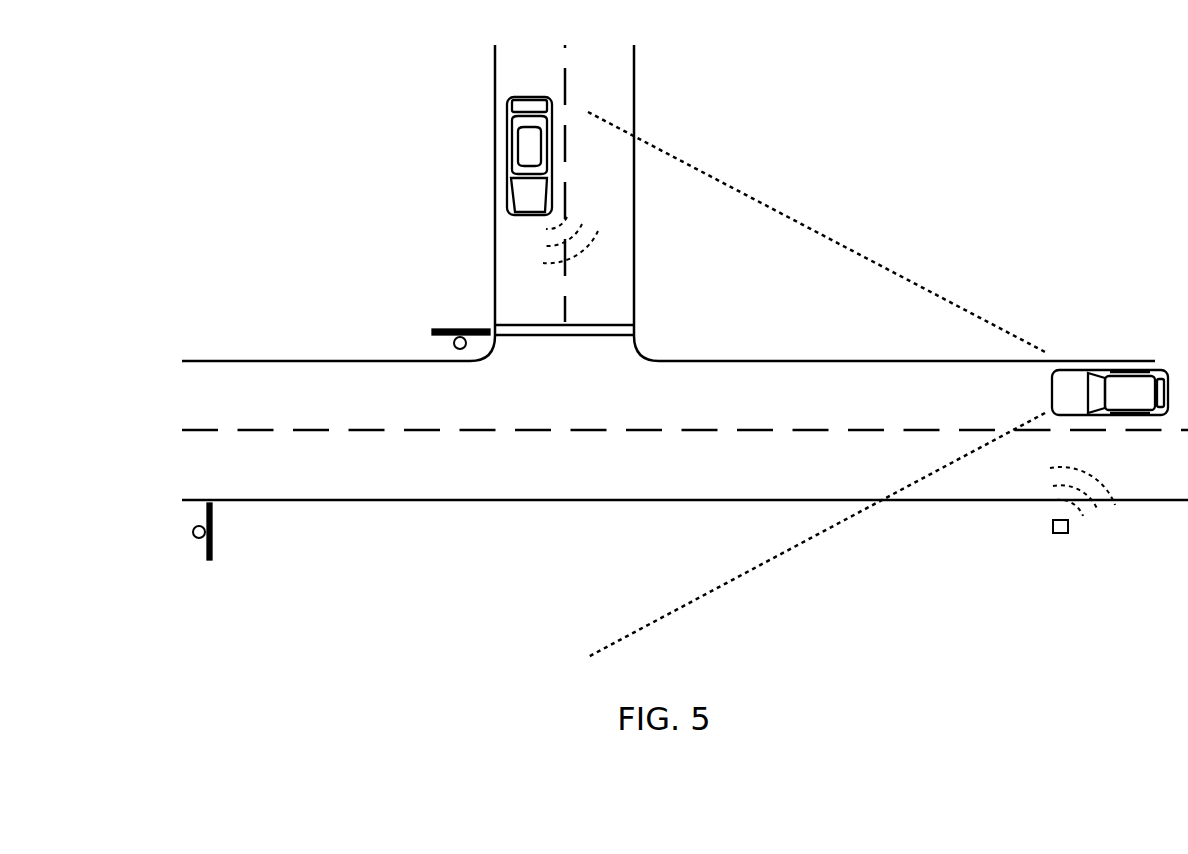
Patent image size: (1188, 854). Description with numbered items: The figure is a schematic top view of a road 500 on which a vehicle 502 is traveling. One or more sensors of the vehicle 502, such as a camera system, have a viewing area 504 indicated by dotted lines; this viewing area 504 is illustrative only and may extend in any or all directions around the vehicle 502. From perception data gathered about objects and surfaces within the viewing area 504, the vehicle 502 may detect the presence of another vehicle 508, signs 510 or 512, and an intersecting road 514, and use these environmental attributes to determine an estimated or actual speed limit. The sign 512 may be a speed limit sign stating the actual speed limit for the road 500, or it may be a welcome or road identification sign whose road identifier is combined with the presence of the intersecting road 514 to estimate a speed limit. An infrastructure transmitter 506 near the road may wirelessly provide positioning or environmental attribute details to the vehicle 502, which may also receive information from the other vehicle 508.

The road 500 is at (1003, 138).
The vehicle 502 is at (1063, 380).
The viewing area 504 is at (972, 317).
The infrastructure transmitter 506 is at (1063, 535).
The another vehicle 508 is at (523, 137).
The sign 510 is at (437, 330).
The sign 512 is at (213, 555).
The intersecting road 514 is at (615, 295).